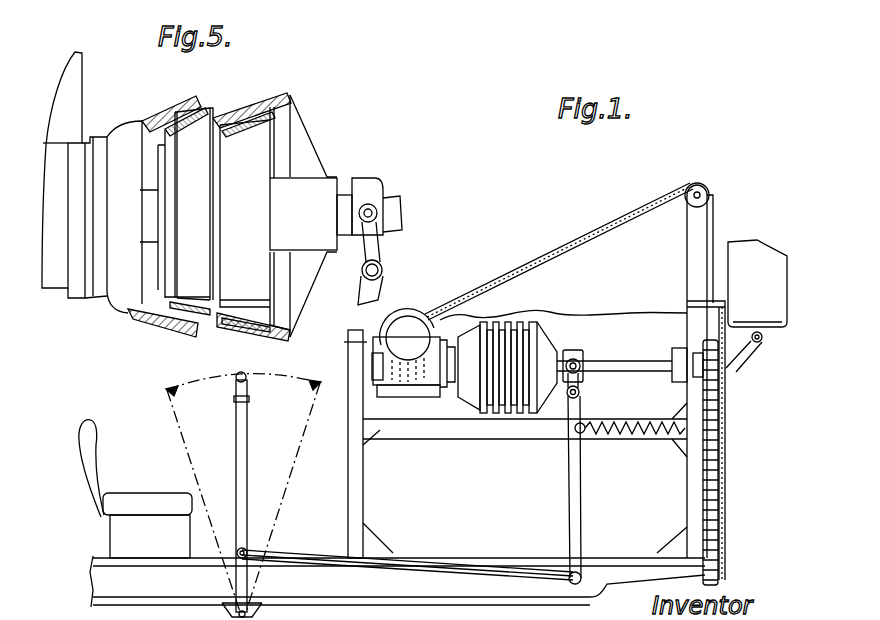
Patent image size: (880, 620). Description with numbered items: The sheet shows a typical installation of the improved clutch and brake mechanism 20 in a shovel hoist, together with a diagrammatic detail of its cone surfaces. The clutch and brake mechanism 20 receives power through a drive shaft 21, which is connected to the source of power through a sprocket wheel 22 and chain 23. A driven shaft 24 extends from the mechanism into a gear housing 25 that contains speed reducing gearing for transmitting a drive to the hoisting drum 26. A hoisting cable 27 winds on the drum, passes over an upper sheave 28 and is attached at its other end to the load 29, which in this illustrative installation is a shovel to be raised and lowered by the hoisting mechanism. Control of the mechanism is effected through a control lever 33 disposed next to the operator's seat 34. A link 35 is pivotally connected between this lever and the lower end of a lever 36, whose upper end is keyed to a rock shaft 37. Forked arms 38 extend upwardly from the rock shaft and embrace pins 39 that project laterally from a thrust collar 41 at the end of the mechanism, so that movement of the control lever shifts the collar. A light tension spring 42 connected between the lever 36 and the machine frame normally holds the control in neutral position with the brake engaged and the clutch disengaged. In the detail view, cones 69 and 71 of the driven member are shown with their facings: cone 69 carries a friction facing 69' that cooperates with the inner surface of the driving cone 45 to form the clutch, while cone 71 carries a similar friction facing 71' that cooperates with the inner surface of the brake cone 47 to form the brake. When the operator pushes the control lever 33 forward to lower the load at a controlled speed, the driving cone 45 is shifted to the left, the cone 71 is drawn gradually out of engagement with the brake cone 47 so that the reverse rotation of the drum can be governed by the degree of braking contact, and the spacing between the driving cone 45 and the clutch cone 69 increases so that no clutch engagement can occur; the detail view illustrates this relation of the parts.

In FIG. 5, the clutch and brake mechanism 20 is at (141, 96).
In FIG. 1, the clutch and brake mechanism 20 is at (513, 313).
In FIG. 1, the drive shaft 21 is at (615, 360).
In FIG. 1, the sprocket wheel 22 is at (703, 331).
In FIG. 1, the chain 23 is at (710, 475).
In FIG. 1, the driven shaft 24 is at (458, 400).
In FIG. 5, the gear housing 25 is at (74, 136).
In FIG. 1, the gear housing 25 is at (400, 400).
In FIG. 1, the hoisting drum 26 is at (408, 318).
In FIG. 1, the hoisting cable 27 is at (590, 238).
In FIG. 1, the upper sheave 28 is at (695, 183).
In FIG. 1, the load 29 is at (753, 242).
In FIG. 1, the control lever 33 is at (240, 376).
In FIG. 1, the operator's seat 34 is at (140, 493).
In FIG. 1, the link 35 is at (437, 566).
In FIG. 5, the lever 36 is at (367, 298).
In FIG. 1, the lever 36 is at (569, 502).
In FIG. 5, the rock shaft 37 is at (362, 276).
In FIG. 1, the rock shaft 37 is at (580, 393).
In FIG. 5, the forked arms 38 is at (377, 250).
In FIG. 1, the forked arms 38 is at (582, 378).
In FIG. 5, the pins 39 is at (374, 212).
In FIG. 1, the pins 39 is at (576, 360).
In FIG. 5, the thrust collar 41 is at (373, 190).
In FIG. 1, the thrust collar 41 is at (570, 350).
In FIG. 1, the tension spring 42 is at (633, 434).
In FIG. 5, the driving cone 45 is at (230, 106).
In FIG. 5, the brake cone 47 is at (164, 118).
In FIG. 5, the cone 69 is at (245, 210).
In FIG. 5, the friction facing 69' is at (253, 100).
In FIG. 5, the cone 71 is at (193, 204).
In FIG. 5, the friction facing 71' is at (188, 101).